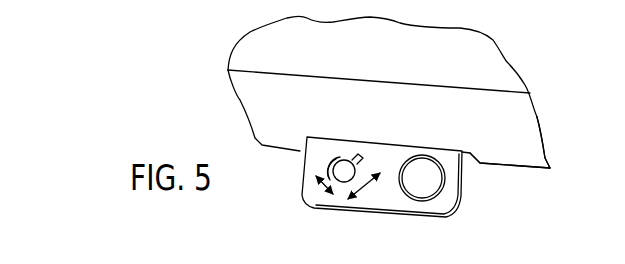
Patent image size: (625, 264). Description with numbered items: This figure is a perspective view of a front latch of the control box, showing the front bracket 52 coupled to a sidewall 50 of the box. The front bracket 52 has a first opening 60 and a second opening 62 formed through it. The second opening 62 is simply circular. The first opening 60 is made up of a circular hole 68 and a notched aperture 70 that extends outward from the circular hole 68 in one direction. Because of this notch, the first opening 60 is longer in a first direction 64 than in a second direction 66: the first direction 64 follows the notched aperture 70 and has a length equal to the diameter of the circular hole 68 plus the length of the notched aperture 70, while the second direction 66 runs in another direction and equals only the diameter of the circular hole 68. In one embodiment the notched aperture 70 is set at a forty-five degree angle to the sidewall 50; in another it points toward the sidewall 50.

The sidewall 50 is at (248, 97).
The front bracket 52 is at (492, 142).
The first opening 60 is at (309, 190).
The second opening 62 is at (449, 176).
The first direction 64 is at (378, 184).
The second direction 66 is at (313, 196).
The circular hole 68 is at (328, 163).
The notched aperture 70 is at (360, 154).